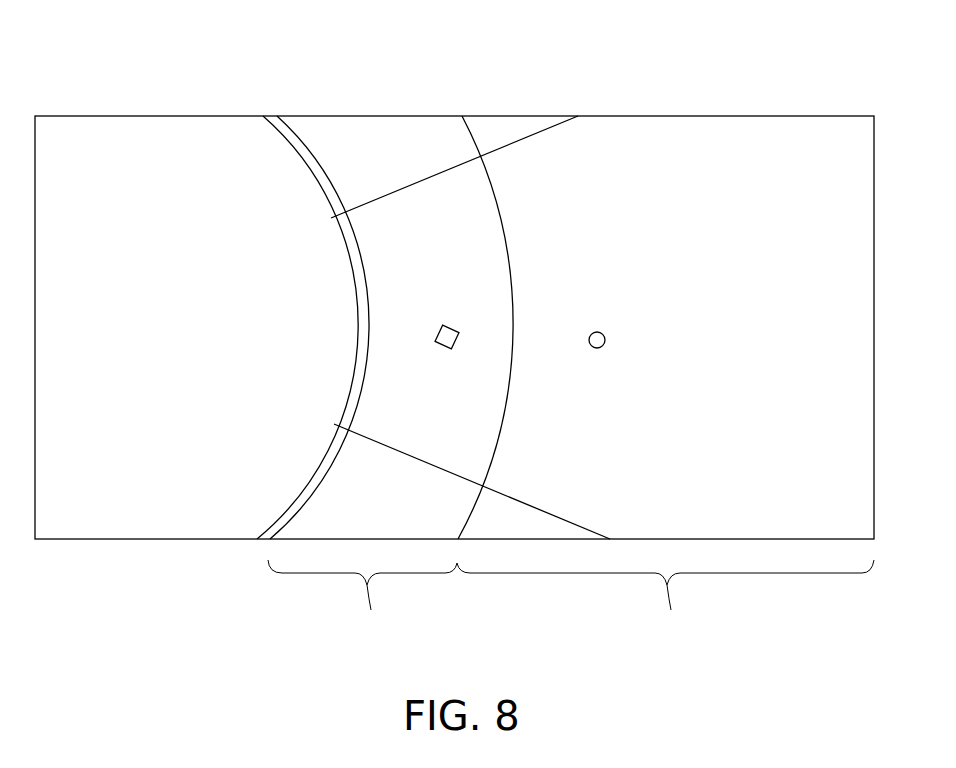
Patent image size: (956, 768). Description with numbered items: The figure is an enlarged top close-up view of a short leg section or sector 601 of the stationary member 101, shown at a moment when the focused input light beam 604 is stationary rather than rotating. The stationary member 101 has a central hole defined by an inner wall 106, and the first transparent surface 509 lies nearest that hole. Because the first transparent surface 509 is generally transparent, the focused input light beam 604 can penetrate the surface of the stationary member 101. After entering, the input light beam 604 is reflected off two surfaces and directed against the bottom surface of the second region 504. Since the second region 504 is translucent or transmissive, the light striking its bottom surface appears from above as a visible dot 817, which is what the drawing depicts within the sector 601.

The stationary member 101 is at (637, 144).
The inner wall 106 is at (291, 143).
The short leg section or sector 601 is at (447, 231).
The focused input light beam 604 is at (440, 332).
The visible dot 817 is at (596, 331).
The first transparent surface 509 is at (362, 599).
The second region 504 is at (665, 599).